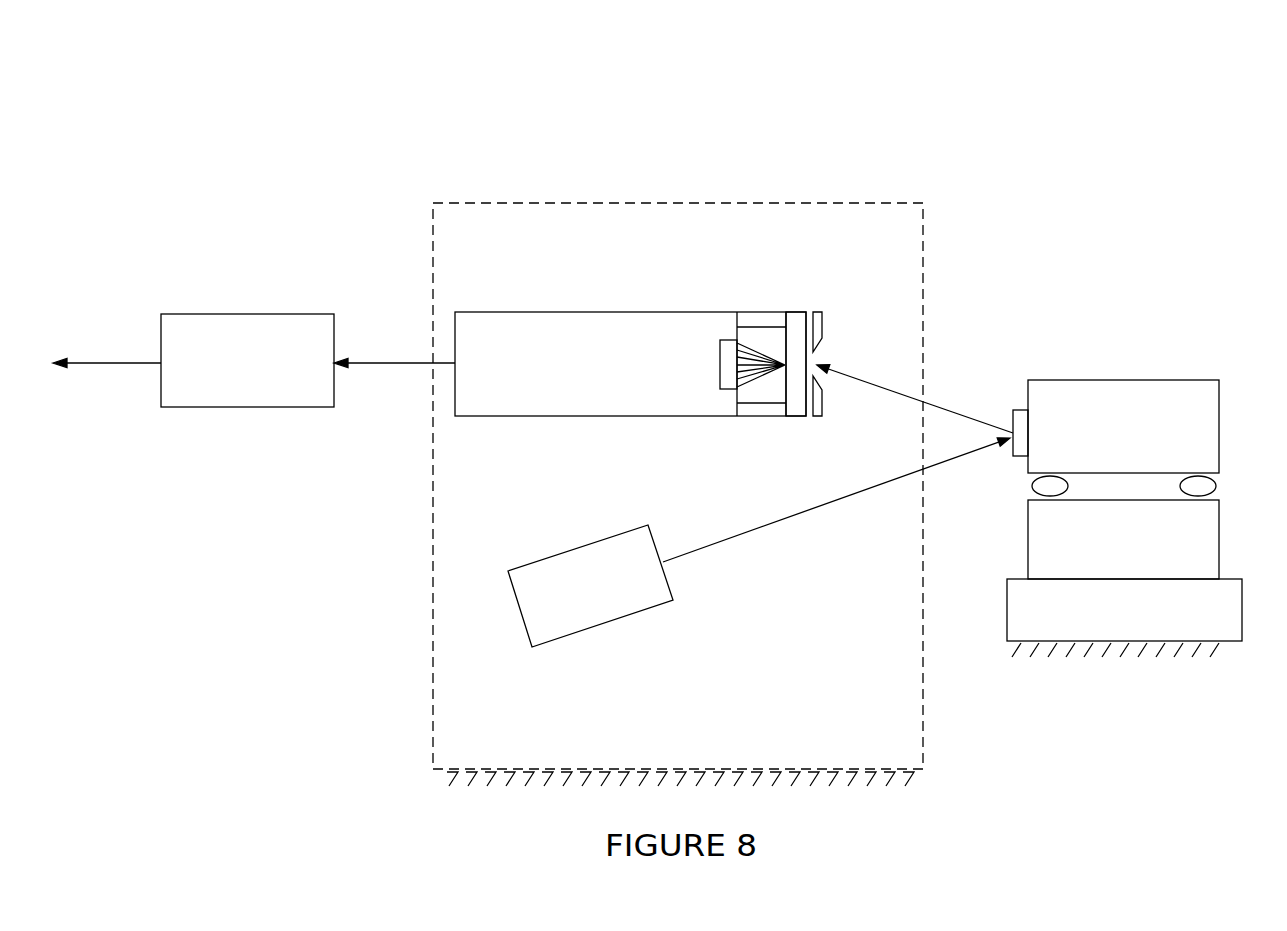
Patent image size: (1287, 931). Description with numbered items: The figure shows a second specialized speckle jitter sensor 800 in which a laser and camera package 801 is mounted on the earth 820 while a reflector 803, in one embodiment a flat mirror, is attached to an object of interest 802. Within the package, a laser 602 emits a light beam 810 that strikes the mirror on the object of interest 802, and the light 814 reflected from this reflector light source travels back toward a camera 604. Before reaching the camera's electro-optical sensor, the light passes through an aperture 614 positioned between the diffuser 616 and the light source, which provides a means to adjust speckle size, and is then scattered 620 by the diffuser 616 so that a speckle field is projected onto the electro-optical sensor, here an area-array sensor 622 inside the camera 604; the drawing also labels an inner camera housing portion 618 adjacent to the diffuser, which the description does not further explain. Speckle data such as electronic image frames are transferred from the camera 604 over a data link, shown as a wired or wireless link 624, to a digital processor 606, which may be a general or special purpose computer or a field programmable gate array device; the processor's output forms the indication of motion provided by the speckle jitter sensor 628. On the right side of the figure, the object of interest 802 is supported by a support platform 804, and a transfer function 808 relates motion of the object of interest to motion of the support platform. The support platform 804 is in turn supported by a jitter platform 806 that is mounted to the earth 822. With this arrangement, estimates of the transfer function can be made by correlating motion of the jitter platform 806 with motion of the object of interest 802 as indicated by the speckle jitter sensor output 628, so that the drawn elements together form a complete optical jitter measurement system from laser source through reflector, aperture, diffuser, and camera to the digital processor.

The specialized jitter sensor 800 is at (827, 78).
The laser and camera package 801 is at (433, 604).
The object of interest 802 is at (1123, 426).
The reflector 803 is at (1020, 410).
The support platform 804 is at (1123, 539).
The jitter platform 806 is at (1124, 610).
The transfer function 808 is at (1030, 487).
The light beam 810 is at (757, 531).
The light 814 is at (847, 373).
The earth 820 is at (900, 773).
The earth 822 is at (1215, 650).
The laser 602 is at (590, 586).
The camera 604 is at (659, 356).
The digital processor 606 is at (247, 360).
The aperture 614 is at (822, 337).
The diffuser 616 is at (793, 412).
The housing 618 is at (757, 412).
The scattered light 620 is at (747, 342).
The area-array sensor 622 is at (730, 350).
The wired or wireless link 624 is at (355, 362).
The speckle jitter sensor output 628 is at (84, 362).